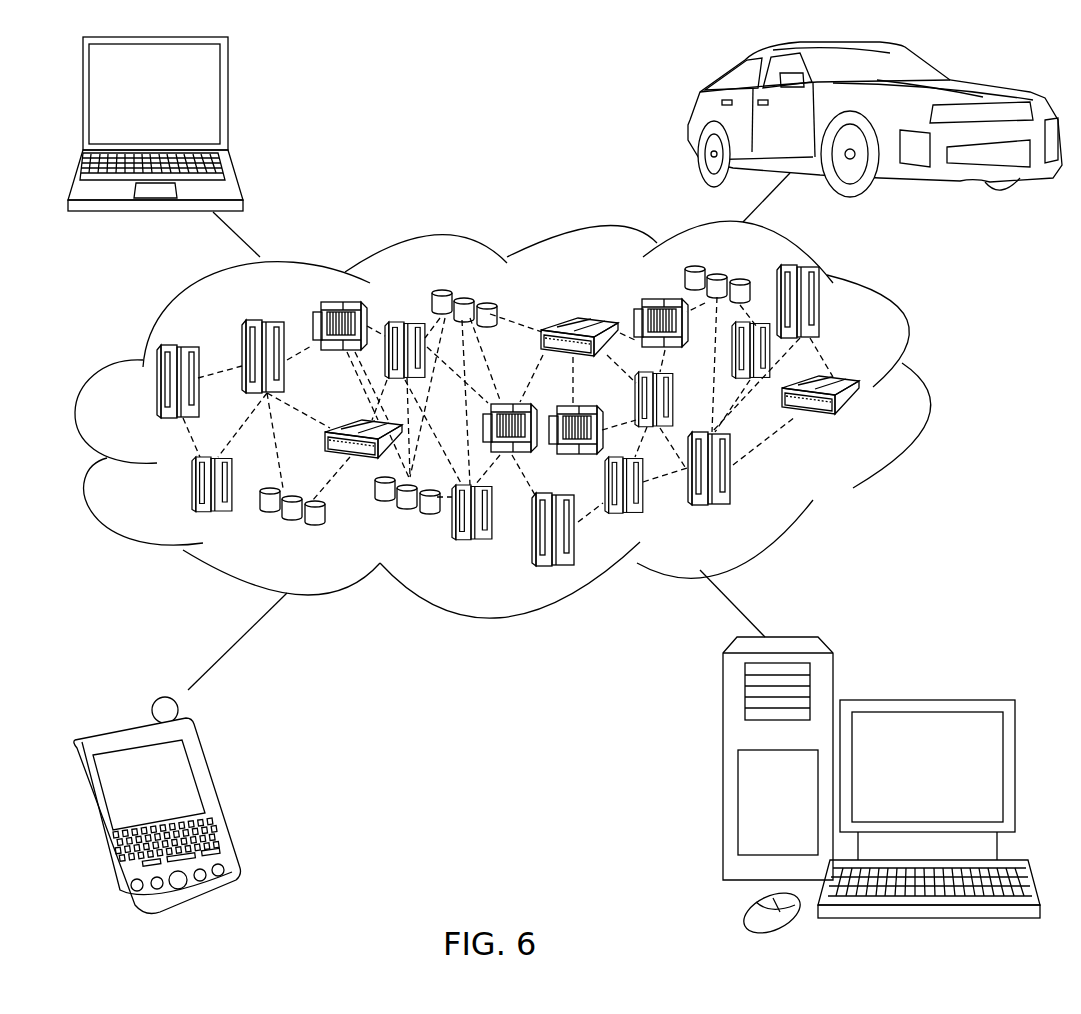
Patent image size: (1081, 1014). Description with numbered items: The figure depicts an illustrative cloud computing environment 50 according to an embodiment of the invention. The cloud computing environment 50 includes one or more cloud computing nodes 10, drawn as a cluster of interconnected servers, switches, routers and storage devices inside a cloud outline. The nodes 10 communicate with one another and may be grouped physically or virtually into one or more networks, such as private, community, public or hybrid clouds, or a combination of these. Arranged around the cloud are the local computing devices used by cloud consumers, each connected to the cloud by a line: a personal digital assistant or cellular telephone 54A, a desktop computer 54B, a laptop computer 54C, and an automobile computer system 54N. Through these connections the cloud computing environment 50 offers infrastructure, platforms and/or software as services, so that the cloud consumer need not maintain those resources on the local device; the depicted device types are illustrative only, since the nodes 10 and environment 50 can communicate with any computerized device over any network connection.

The cloud computing nodes 10 is at (872, 426).
The cloud computing environment 50 is at (923, 392).
The personal digital assistant or cellular telephone 54A is at (217, 797).
The desktop computer 54B is at (923, 698).
The laptop computer 54C is at (228, 102).
The automobile computer system 54N is at (693, 117).